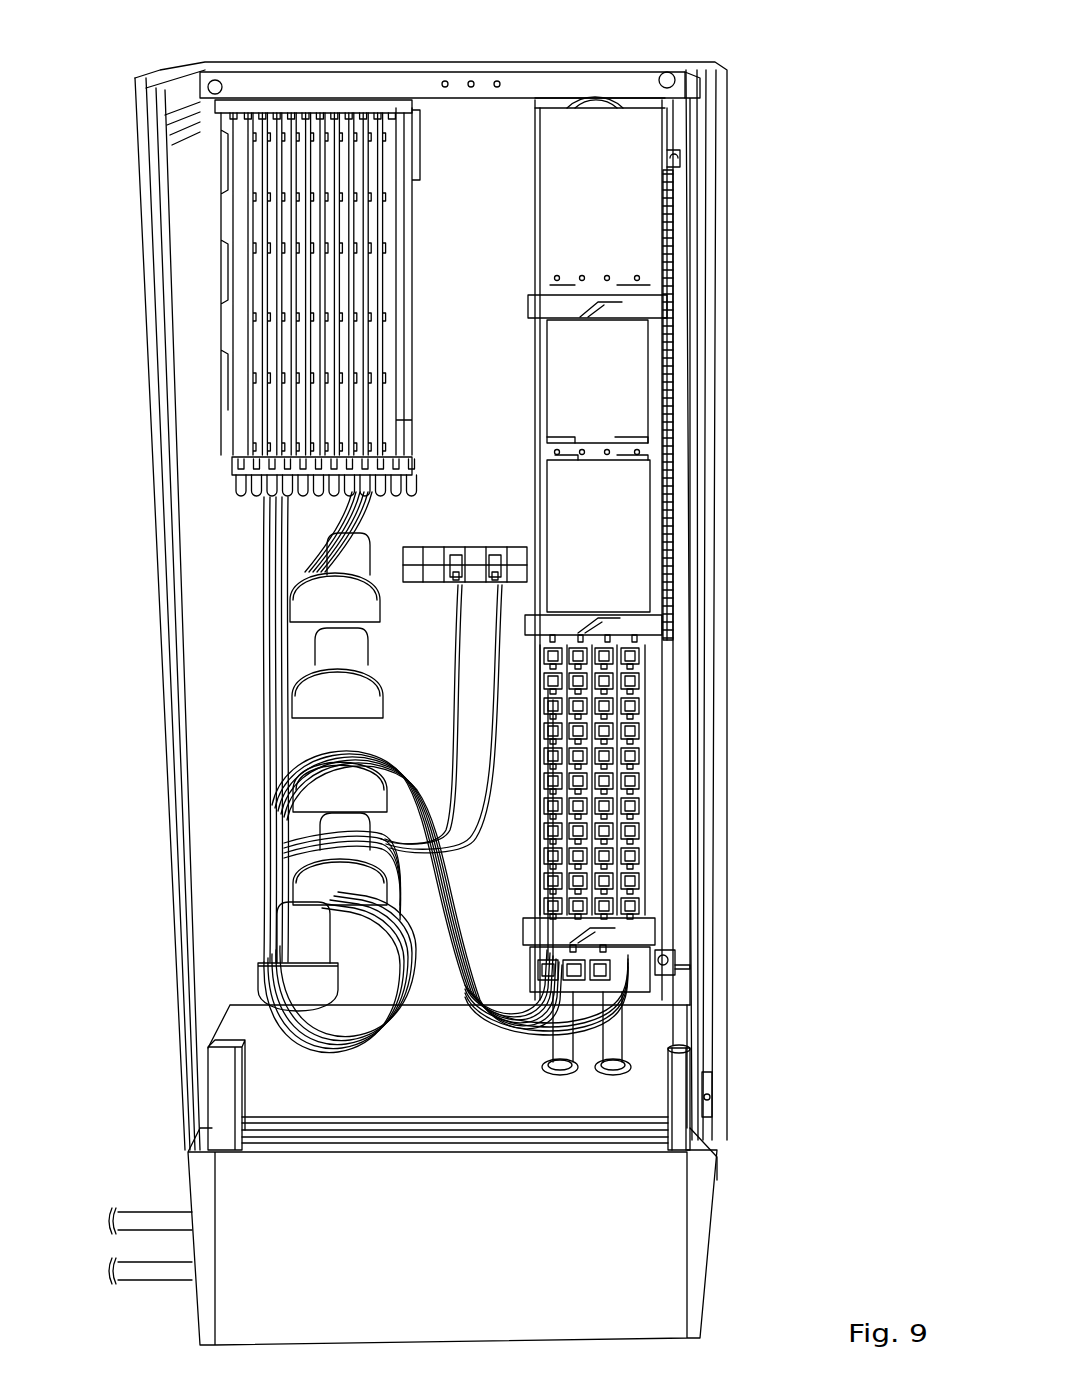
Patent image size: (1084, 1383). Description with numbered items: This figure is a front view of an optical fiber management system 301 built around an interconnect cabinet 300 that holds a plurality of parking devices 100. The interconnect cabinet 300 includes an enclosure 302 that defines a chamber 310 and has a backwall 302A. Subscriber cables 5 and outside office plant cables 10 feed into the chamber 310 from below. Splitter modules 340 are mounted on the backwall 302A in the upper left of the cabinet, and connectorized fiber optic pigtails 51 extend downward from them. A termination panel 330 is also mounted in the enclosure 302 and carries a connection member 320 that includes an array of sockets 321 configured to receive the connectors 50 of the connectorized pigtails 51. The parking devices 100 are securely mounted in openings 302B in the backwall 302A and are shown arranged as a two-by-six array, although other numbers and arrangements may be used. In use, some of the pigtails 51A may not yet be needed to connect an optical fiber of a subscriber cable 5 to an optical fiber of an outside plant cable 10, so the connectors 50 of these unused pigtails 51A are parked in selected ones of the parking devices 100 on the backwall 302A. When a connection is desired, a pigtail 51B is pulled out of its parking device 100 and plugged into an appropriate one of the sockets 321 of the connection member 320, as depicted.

The interconnect cabinet 300 is at (665, 50).
The optical fiber management system 301 is at (757, 263).
The enclosure 302 is at (555, 62).
The backwall 302A is at (510, 368).
The openings 302B is at (525, 607).
The chamber 310 is at (489, 125).
The connection member 320 is at (671, 782).
The sockets 321 is at (628, 707).
The termination panel 330 is at (675, 263).
The splitter modules 340 is at (238, 105).
The parking devices 100 is at (397, 612).
The connectors 50 is at (455, 556).
The connectorized fiber optic pigtails 51 is at (282, 653).
The unused pigtails 51A is at (450, 648).
The pigtail 51B is at (553, 768).
The outside office plant (OSP) cables 10 is at (612, 1043).
The subscriber cables 5 is at (558, 1045).